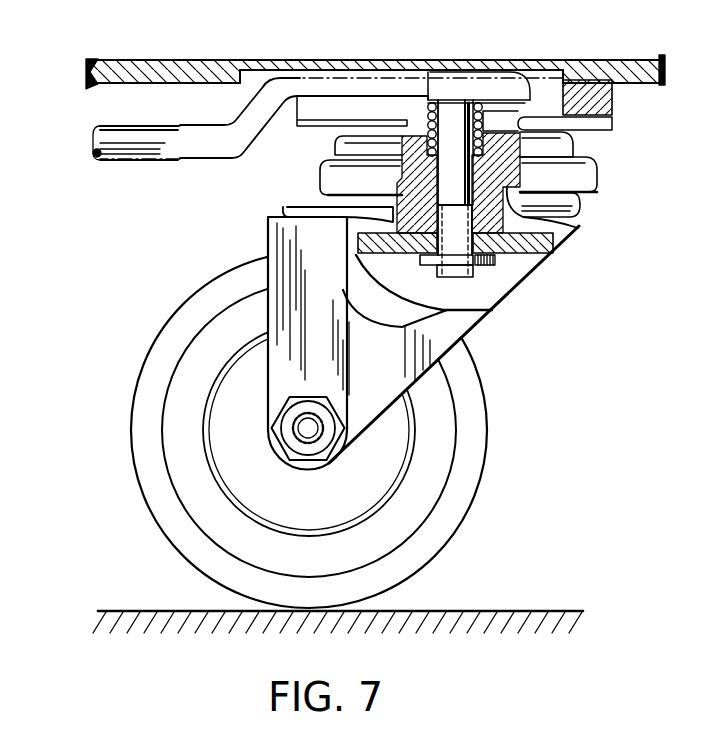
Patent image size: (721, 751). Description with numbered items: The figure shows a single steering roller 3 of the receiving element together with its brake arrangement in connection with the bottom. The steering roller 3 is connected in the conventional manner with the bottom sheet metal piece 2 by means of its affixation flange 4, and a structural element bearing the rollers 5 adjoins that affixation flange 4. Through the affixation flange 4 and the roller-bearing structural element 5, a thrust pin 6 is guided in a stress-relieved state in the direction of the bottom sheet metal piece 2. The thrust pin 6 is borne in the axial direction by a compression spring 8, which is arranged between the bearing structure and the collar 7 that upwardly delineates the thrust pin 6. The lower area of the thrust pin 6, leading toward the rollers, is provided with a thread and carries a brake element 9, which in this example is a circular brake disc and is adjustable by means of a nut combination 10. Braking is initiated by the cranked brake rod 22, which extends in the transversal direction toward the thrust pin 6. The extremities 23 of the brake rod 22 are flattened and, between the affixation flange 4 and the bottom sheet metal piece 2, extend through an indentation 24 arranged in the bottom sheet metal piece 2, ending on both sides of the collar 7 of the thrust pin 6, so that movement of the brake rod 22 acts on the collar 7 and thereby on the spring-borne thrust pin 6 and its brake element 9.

The bottom sheet metal piece 2 is at (153, 62).
The brake rod 22 is at (105, 141).
The extremities of the brake rod 23 is at (323, 83).
The indentation 24 is at (260, 71).
The thrust pin 6 is at (447, 117).
The collar 7 is at (476, 97).
The compression spring 8 is at (483, 104).
The affixation flange 4 is at (596, 82).
The brake element 9 is at (555, 245).
The nut combination 10 is at (492, 263).
The structural element bearing the rollers 5 is at (285, 240).
The steering roller 3 is at (448, 516).